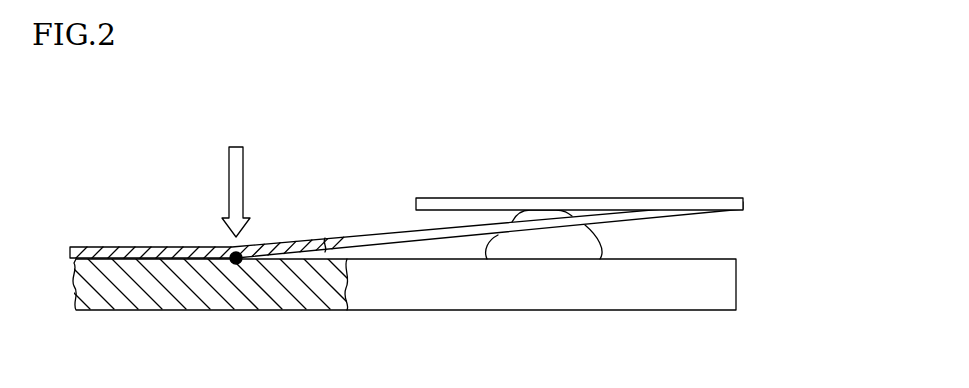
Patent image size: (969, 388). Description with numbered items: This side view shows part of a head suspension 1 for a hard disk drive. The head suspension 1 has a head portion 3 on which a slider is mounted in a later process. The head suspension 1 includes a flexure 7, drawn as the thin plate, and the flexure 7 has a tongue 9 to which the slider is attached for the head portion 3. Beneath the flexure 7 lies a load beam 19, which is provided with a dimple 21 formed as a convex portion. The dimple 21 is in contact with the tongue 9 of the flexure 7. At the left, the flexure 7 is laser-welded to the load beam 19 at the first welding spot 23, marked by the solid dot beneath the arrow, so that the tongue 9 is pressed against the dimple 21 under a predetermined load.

The head suspension 1 is at (619, 153).
The head portion 3 is at (567, 178).
The flexure 7 is at (362, 236).
The tongue 9 is at (452, 198).
The load beam 19 is at (573, 295).
The dimple 21 is at (597, 243).
The first welding spot 23 is at (228, 250).